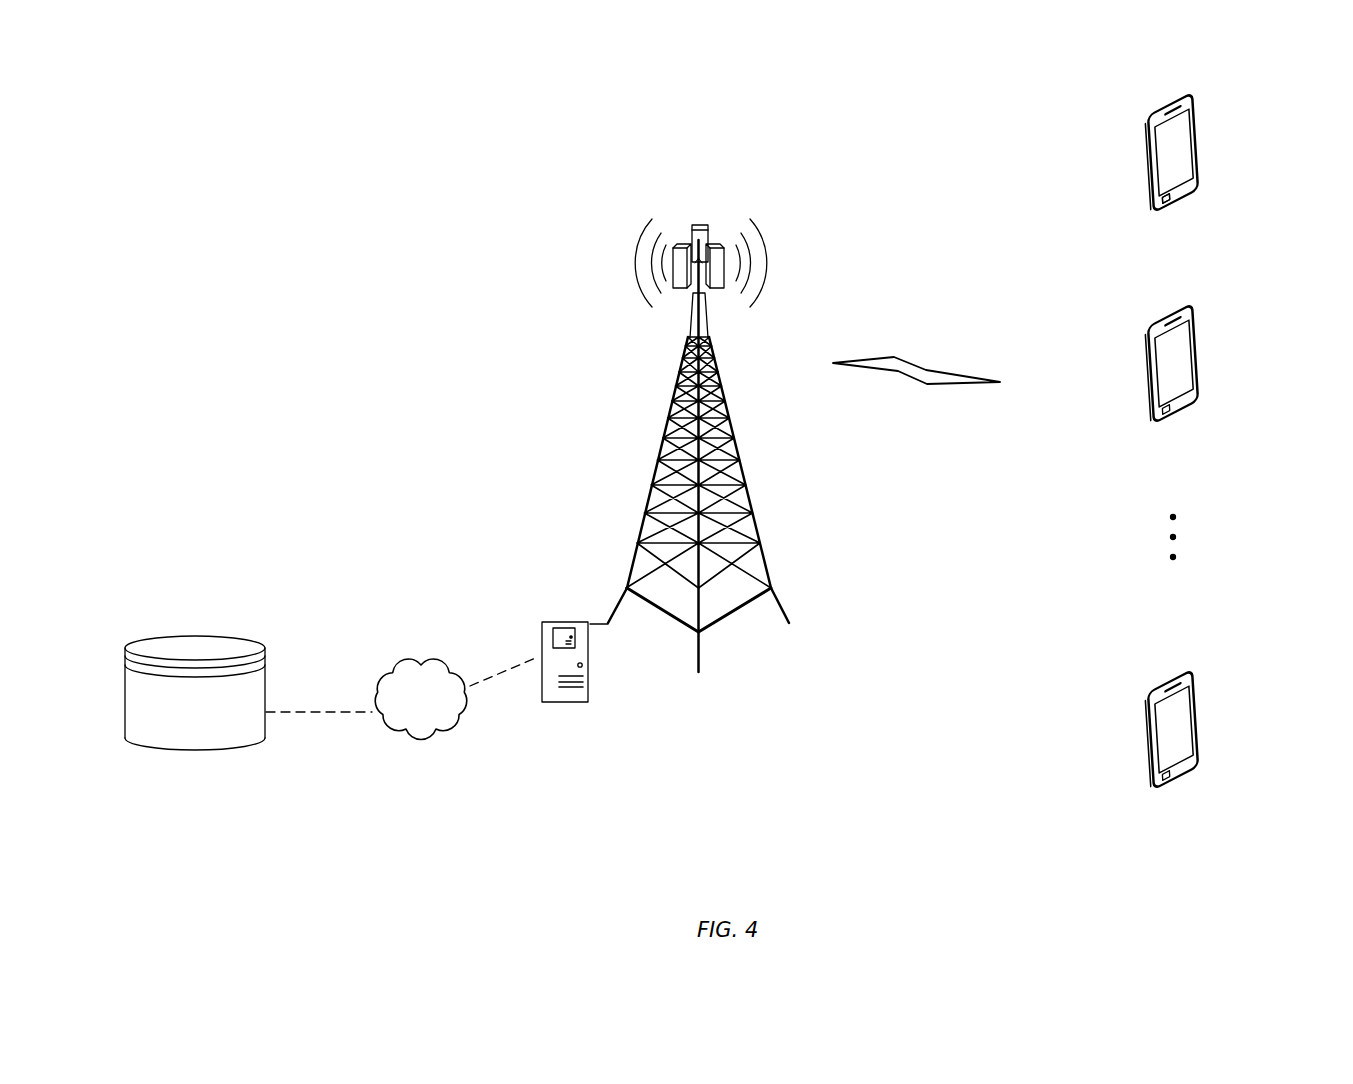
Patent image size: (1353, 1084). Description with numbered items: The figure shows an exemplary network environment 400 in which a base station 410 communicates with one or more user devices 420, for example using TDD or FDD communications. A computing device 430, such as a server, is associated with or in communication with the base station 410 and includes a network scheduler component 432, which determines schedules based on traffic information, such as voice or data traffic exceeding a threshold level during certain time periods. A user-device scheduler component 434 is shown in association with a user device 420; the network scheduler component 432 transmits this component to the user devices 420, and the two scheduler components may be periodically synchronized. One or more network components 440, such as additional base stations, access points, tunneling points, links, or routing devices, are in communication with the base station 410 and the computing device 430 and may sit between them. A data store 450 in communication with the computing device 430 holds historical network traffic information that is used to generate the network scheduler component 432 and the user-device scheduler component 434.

The environment 400 is at (470, 177).
The base station 410 is at (743, 482).
The user device 420 is at (1191, 94).
The user-device scheduler component 434 is at (1149, 208).
The computing device 430 is at (562, 702).
The network scheduler component 432 is at (553, 640).
The network components 440 is at (445, 660).
The data store 450 is at (223, 636).